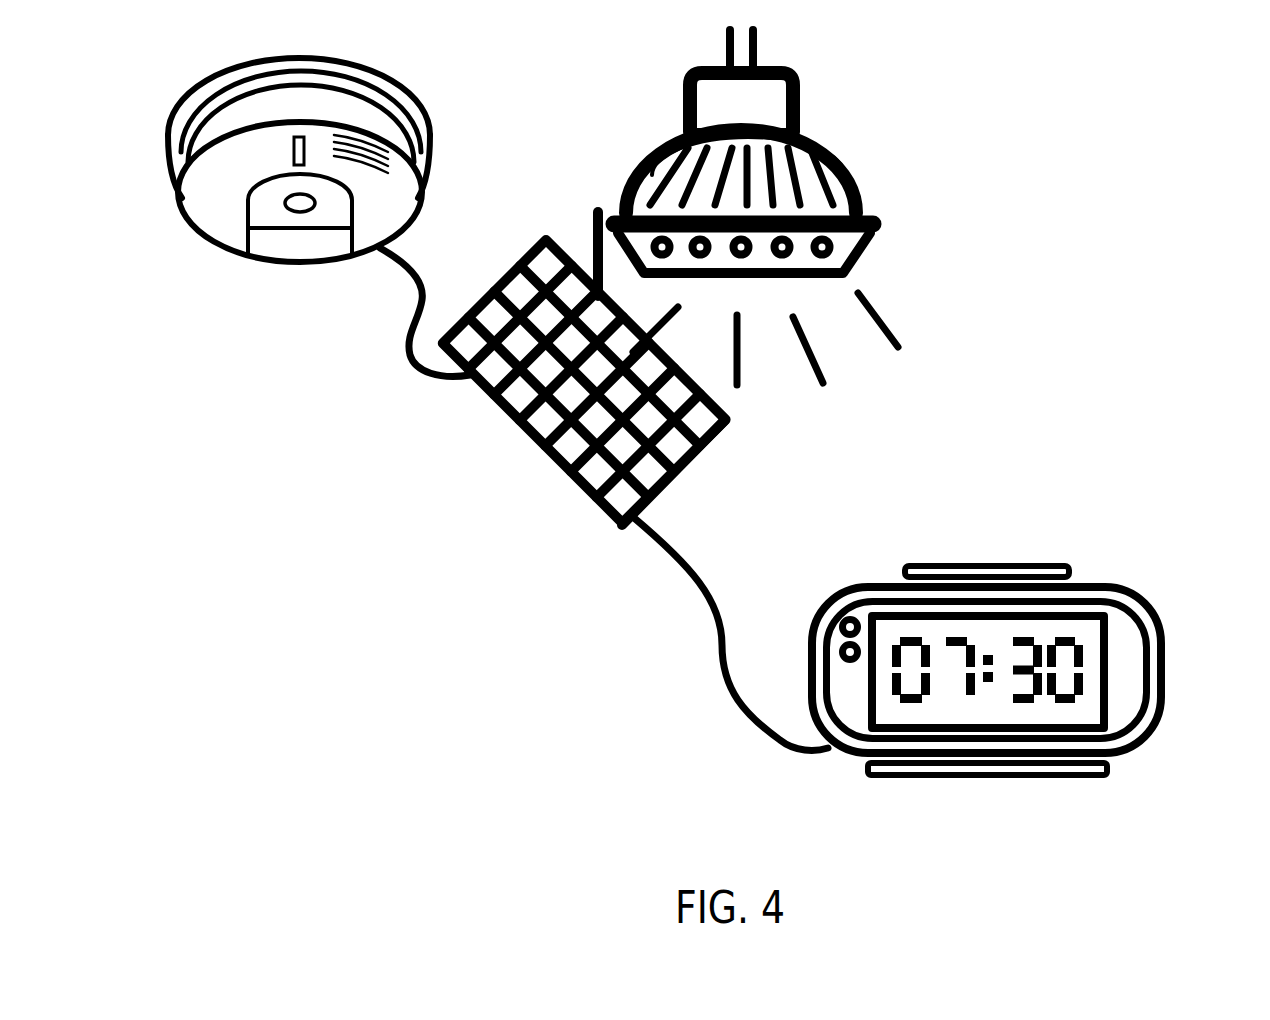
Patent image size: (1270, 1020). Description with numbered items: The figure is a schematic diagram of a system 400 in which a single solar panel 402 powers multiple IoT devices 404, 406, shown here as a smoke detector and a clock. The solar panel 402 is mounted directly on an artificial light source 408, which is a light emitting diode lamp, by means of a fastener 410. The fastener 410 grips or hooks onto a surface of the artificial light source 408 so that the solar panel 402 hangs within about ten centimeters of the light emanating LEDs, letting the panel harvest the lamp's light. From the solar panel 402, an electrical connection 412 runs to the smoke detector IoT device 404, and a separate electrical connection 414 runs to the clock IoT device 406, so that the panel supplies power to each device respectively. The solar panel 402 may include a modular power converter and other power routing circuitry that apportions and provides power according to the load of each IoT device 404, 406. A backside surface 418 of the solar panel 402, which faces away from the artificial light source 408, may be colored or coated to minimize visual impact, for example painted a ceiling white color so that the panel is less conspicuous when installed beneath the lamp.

The system 400 is at (1146, 71).
The solar panel 402 is at (557, 463).
The IoT device 404 is at (398, 85).
The IoT device 406 is at (1093, 585).
The artificial light source 408 is at (838, 147).
The fastener 410 is at (597, 208).
The electrical connection 412 is at (408, 320).
The electrical connection 414 is at (717, 660).
The backside surface 418 is at (710, 440).